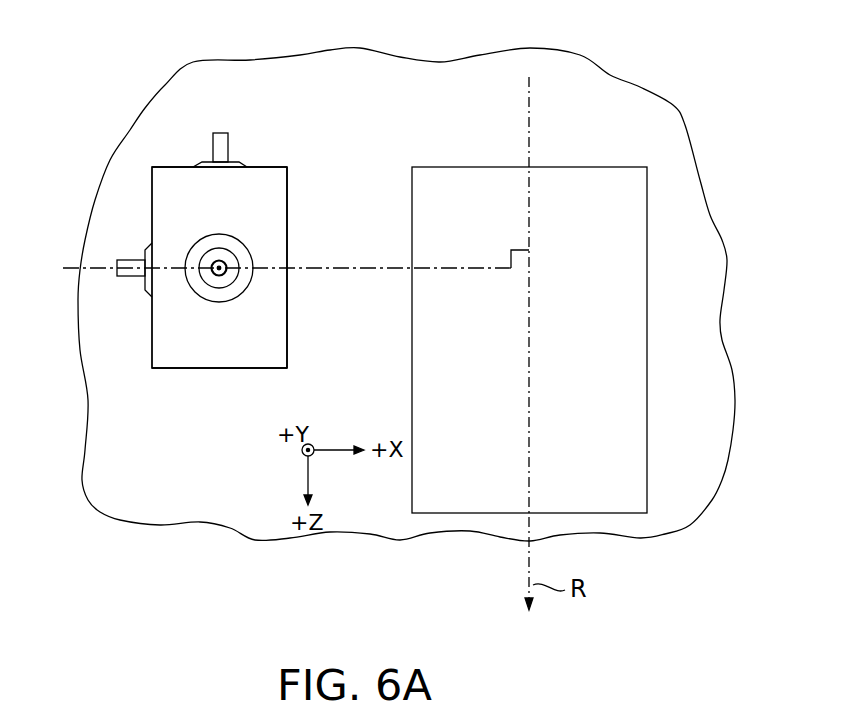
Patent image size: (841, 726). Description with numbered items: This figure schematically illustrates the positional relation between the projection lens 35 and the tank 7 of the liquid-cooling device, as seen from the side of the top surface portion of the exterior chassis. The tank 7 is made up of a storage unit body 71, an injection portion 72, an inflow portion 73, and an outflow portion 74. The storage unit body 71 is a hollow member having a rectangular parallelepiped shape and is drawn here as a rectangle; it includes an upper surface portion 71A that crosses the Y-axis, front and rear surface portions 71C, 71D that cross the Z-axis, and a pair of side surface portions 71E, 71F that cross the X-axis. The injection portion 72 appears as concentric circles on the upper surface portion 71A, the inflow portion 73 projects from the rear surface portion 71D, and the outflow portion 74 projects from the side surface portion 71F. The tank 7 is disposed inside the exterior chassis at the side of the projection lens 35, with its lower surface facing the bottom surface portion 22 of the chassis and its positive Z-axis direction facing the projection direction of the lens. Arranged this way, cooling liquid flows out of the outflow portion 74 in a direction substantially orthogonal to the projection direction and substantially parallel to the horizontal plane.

The bottom surface portion 22 is at (378, 85).
The tank 7 is at (312, 152).
The storage unit body 71 is at (275, 345).
The upper surface portion 71A is at (275, 182).
The front surface portion 71C is at (205, 372).
The rear surface portion 71D is at (262, 167).
The side surface portion 71E is at (287, 245).
The side surface portion 71F is at (151, 232).
The injection portion 72 is at (222, 265).
The inflow portion 73 is at (218, 140).
The outflow portion 74 is at (133, 282).
The projection lens 35 is at (647, 258).